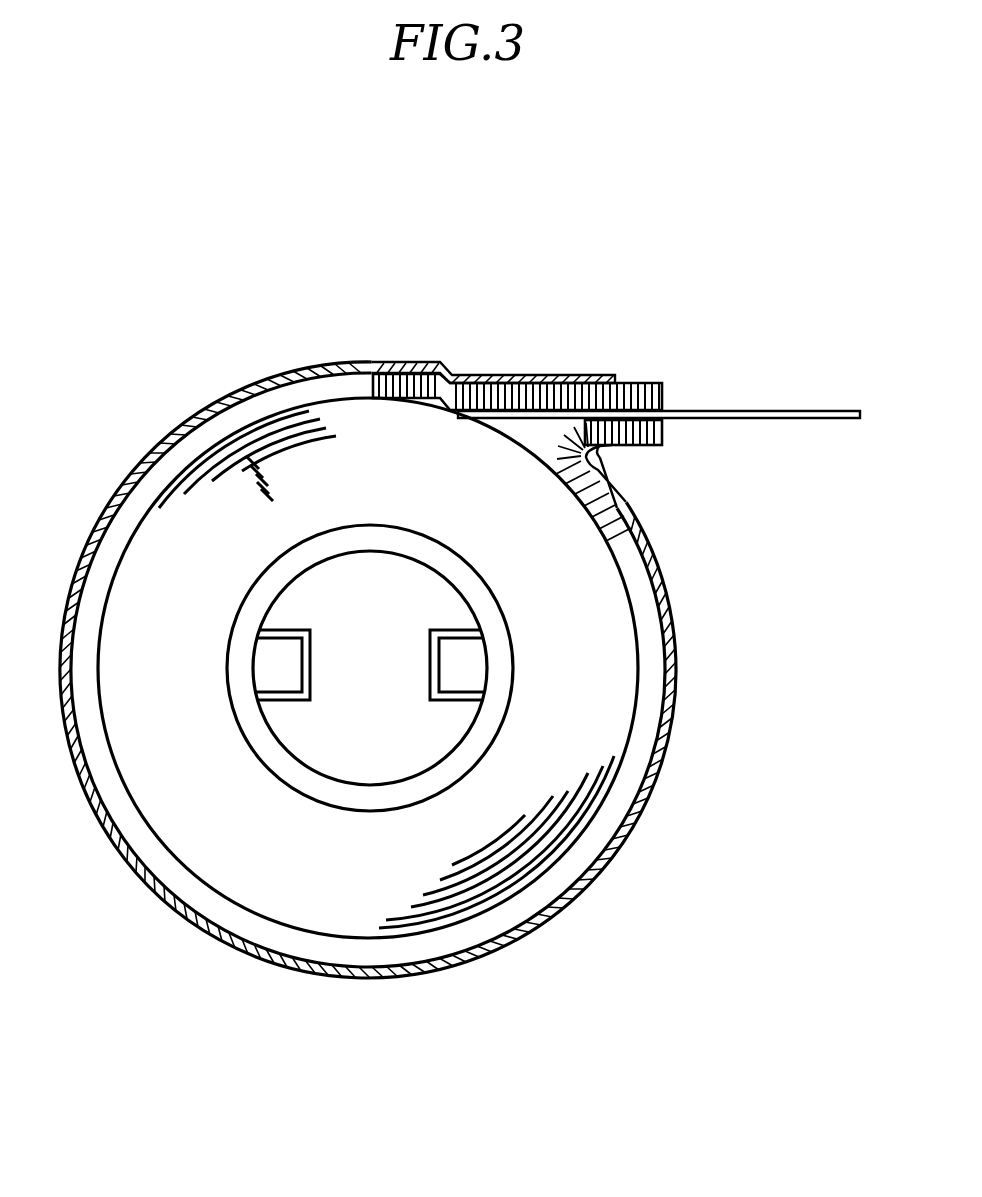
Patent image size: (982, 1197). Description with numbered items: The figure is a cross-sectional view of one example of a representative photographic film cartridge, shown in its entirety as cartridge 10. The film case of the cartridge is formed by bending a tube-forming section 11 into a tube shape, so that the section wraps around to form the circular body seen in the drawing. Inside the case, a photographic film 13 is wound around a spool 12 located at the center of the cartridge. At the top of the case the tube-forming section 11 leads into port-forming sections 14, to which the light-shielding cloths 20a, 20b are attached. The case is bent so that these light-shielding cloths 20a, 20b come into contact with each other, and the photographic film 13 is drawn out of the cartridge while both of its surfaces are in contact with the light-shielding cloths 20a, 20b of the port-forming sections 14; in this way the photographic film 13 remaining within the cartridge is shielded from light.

The tape measure 10 is at (251, 372).
The tube-forming section 11 is at (678, 785).
The spool 12 is at (498, 603).
The photographic film 13 is at (772, 411).
The port-forming section 14 is at (568, 377).
The upper tape guide 20a is at (662, 397).
The lower tape guide 20b is at (662, 432).